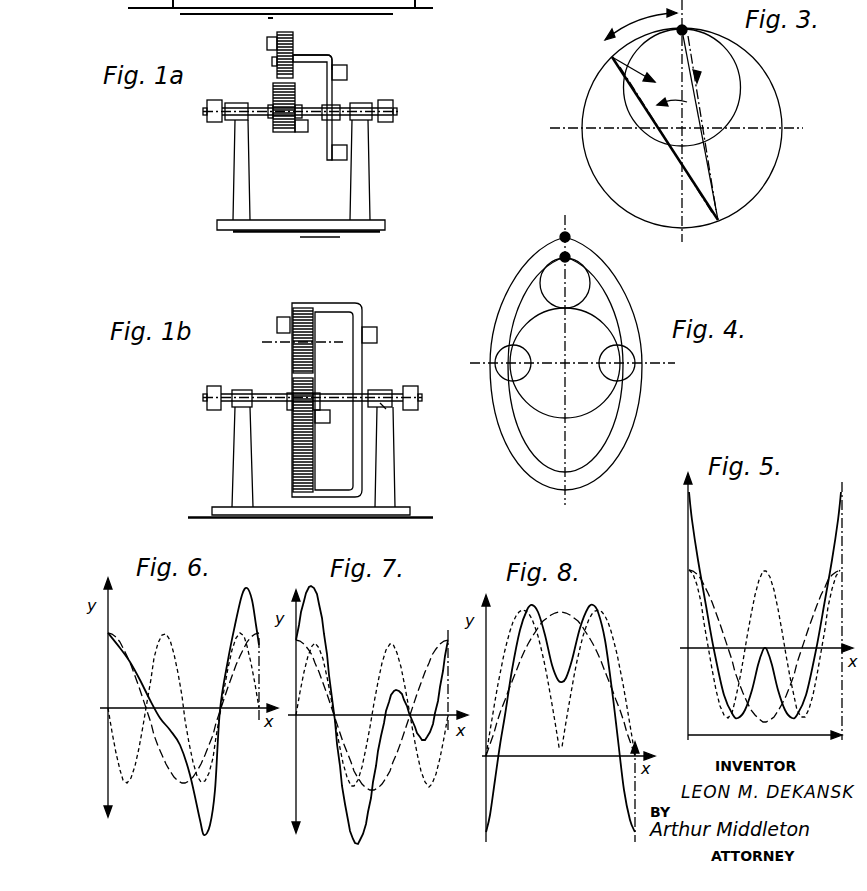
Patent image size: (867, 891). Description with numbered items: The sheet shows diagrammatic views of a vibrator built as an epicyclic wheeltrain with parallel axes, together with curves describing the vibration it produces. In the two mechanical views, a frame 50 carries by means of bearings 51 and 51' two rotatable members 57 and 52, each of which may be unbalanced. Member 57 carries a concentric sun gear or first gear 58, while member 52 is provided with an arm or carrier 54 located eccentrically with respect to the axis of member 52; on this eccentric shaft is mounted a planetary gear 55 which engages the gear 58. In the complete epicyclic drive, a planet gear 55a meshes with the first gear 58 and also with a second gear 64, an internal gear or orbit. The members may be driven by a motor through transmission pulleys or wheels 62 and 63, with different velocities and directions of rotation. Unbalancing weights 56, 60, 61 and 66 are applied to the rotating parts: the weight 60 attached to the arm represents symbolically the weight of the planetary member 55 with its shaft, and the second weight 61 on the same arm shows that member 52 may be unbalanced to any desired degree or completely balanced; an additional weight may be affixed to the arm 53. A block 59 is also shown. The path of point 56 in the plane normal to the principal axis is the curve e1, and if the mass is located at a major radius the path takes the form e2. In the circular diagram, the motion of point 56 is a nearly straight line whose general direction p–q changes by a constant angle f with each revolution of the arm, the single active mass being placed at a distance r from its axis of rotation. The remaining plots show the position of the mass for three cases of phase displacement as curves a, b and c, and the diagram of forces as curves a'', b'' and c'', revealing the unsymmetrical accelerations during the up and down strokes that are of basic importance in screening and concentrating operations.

In FIG. 1A, the frame 50 is at (370, 198).
In FIG. 1B, the frame 50 is at (397, 478).
In FIG. 1A, the bearing 51 is at (240, 99).
In FIG. 1B, the bearing 51 is at (255, 414).
In FIG. 1A, the bearing 51' is at (368, 98).
In FIG. 1B, the bearing 51' is at (384, 383).
In FIG. 1A, the rotatable member 52 is at (345, 115).
In FIG. 1B, the rotatable member 52 is at (383, 409).
In FIG. 1A, the arm 53 is at (327, 90).
In FIG. 1A, the arm or carrier (eccentric shaft) 54 is at (333, 60).
In FIG. 1A, the planetary gear 55 is at (293, 38).
In FIG. 3, the planetary gear 55 is at (737, 67).
In FIG. 4, the planetary gear 55 is at (590, 283).
In FIG. 1B, the planet gear 55a is at (293, 358).
In FIG. 1A, the unbalancing weight (active mass) 56 is at (267, 41).
In FIG. 1B, the unbalancing weight (active mass) 56 is at (277, 327).
In FIG. 3, the unbalancing weight (active mass) 56 is at (690, 30).
In FIG. 4, the unbalancing weight (active mass) 56 is at (571, 256).
In FIG. 1A, the rotatable member 57 is at (257, 115).
In FIG. 1B, the rotatable member 57 is at (270, 393).
In FIG. 1A, the sun gear (first gear) 58 is at (282, 132).
In FIG. 1B, the sun gear (first gear) 58 is at (292, 415).
In FIG. 4, the sun gear (first gear) 58 is at (603, 325).
In FIG. 1A, the block 59 is at (300, 128).
In FIG. 1B, the block 59 is at (322, 423).
In FIG. 1A, the unbalancing weight 60 is at (347, 72).
In FIG. 1A, the unbalancing weight 61 is at (340, 160).
In FIG. 1A, the transmission pulley 62 is at (395, 106).
In FIG. 1B, the transmission pulley 62 is at (420, 400).
In FIG. 1A, the transmission pulley 63 is at (210, 122).
In FIG. 1B, the transmission pulley 63 is at (210, 412).
In FIG. 1B, the second gear (internal gear, orbit) 64 is at (293, 488).
In FIG. 3, the second gear (internal gear, orbit) 64 is at (778, 93).
In FIG. 1B, the unbalancing weight 66 is at (377, 333).
In FIG. 3, the direction end point p is at (701, 20).
In FIG. 3, the direction end point q is at (709, 136).
In FIG. 3, the distance r is at (655, 133).
In FIG. 3, the constant angle f is at (641, 20).
In FIG. 4, the path curve e1 is at (513, 315).
In FIG. 4, the path curve e2 is at (512, 278).
In FIG. 6, the position curve a is at (183, 708).
In FIG. 7, the position curve a is at (372, 715).
In FIG. 6, the position curve b is at (183, 702).
In FIG. 7, the position curve b is at (372, 714).
In FIG. 5, the position curve c is at (765, 605).
In FIG. 6, the position curve c is at (183, 711).
In FIG. 7, the position curve c is at (372, 715).
In FIG. 8, the force curve a'' is at (560, 683).
In FIG. 8, the force curve b'' is at (560, 672).
In FIG. 8, the force curve c'' is at (560, 718).